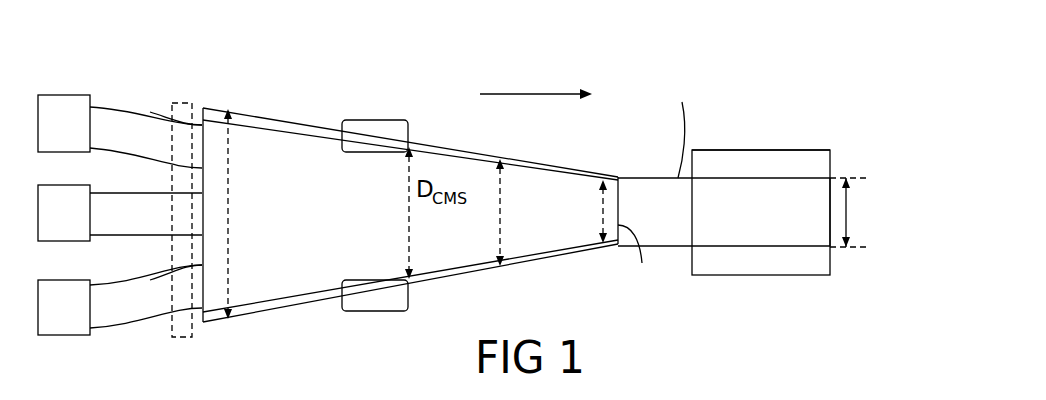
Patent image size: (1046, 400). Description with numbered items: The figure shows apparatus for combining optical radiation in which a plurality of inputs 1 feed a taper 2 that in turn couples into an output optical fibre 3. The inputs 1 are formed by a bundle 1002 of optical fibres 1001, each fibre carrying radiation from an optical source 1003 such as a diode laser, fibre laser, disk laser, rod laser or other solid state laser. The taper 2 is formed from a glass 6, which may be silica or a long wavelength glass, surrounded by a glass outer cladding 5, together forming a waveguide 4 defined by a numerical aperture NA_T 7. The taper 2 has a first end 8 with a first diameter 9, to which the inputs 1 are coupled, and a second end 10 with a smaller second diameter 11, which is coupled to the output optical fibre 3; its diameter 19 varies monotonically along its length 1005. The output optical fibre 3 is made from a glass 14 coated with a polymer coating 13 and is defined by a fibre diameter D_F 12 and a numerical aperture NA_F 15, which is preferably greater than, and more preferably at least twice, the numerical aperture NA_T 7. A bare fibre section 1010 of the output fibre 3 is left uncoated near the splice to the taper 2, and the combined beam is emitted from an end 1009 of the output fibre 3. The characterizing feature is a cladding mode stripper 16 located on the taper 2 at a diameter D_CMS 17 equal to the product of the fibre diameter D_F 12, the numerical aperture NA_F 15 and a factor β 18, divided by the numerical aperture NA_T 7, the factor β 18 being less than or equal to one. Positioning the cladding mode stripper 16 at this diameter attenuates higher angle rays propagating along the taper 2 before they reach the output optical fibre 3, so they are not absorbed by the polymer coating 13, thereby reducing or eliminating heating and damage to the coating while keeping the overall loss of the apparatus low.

The inputs 1 is at (120, 108).
The taper 2 is at (263, 115).
The output optical fibre 3 is at (707, 149).
The waveguide 4 is at (257, 290).
The glass outer cladding 5 is at (318, 300).
The glass 6 is at (296, 155).
The numerical aperture NA_T 7 is at (352, 30).
The first end 8 is at (204, 247).
The first diameter 9 is at (229, 200).
The second end 10 is at (644, 260).
The second diameter 11 is at (603, 219).
The fibre diameter D_F 12 is at (848, 196).
The polymer coating 13 is at (782, 149).
The glass 14 is at (672, 178).
The numerical aperture NA_F 15 is at (755, 33).
The cladding mode stripper 16 is at (386, 120).
The diameter D_CMS 17 is at (413, 172).
The factor β 18 is at (740, 318).
The diameter 19 is at (502, 194).
The optical fibres 1001 is at (158, 122).
The bundle 1002 is at (183, 338).
The optical sources 1003 is at (58, 95).
The length 1005 is at (527, 93).
The end 1009 is at (830, 213).
The bare fibre section 1010 is at (678, 125).